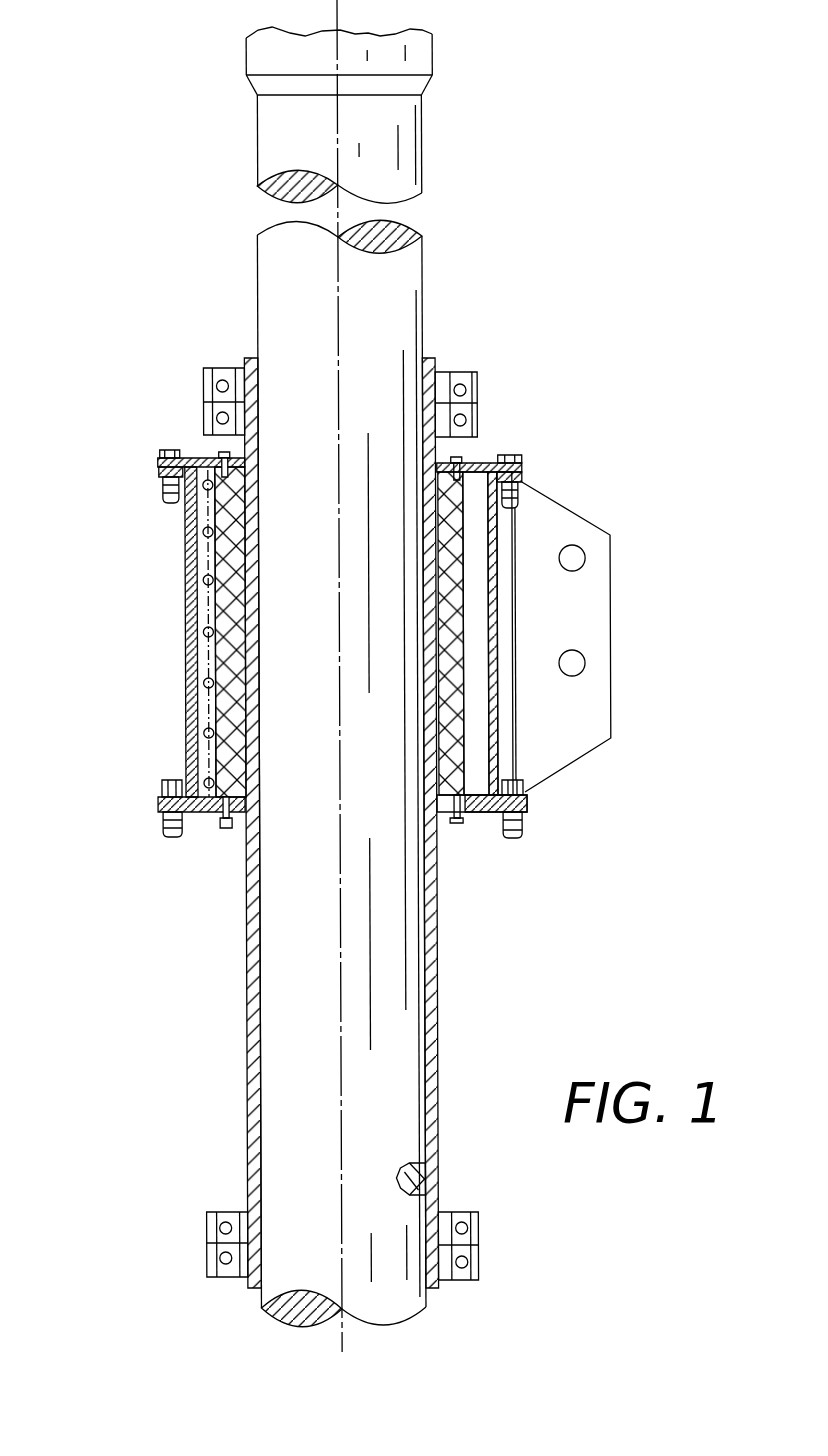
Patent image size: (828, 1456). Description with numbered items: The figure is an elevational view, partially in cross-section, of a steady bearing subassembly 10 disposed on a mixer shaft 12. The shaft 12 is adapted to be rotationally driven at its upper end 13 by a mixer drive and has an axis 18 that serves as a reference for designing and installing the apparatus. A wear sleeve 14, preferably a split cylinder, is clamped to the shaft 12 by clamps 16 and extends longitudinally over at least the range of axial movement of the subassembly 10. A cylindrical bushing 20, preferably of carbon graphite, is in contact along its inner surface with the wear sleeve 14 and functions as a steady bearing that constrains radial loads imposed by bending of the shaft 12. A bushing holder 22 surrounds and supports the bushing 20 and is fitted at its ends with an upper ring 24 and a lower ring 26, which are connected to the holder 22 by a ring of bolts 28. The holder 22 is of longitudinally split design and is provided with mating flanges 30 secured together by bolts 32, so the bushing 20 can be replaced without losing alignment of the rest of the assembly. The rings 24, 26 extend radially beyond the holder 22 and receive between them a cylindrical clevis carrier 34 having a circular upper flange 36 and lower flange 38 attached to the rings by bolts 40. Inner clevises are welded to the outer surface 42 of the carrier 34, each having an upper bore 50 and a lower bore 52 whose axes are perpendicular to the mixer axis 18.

The steady bearing subassembly 10 is at (367, 797).
The mixer shaft 12 is at (383, 711).
The upper end 13 is at (375, 59).
The wear sleeve 14 is at (386, 797).
The clamps 16 is at (385, 813).
The axis 18 is at (385, 685).
The bushing 20 is at (482, 696).
The bushing holder 22 is at (517, 633).
The upper ring 24 is at (544, 466).
The lower ring 26 is at (202, 693).
The bolts 28 is at (353, 641).
The mating flanges 30 is at (169, 632).
The bolts 32 is at (162, 632).
The clevis carrier 34 is at (534, 633).
The upper flange 36 is at (593, 623).
The lower flange 38 is at (541, 809).
The bolts 40 is at (142, 633).
The outer surface 42 is at (551, 633).
The upper bore 50 is at (615, 552).
The lower bore 52 is at (609, 683).